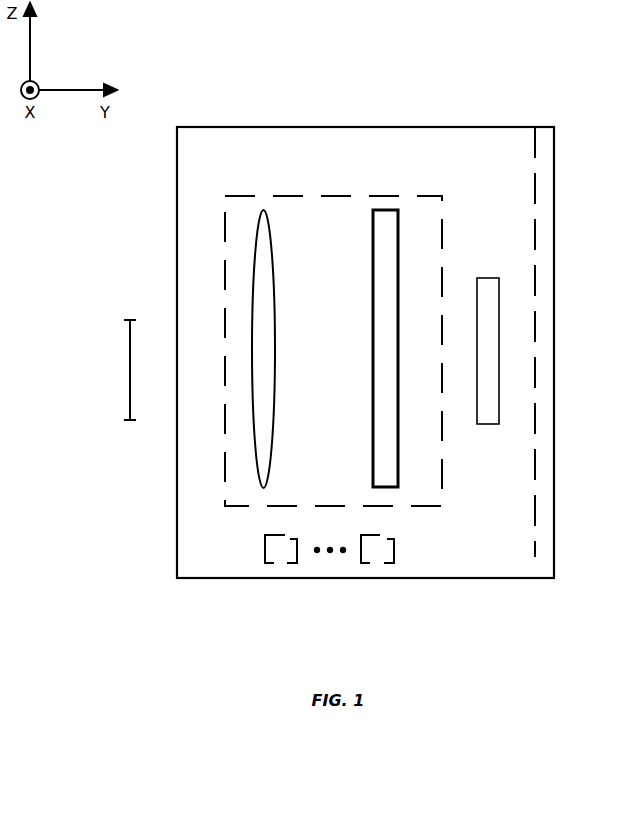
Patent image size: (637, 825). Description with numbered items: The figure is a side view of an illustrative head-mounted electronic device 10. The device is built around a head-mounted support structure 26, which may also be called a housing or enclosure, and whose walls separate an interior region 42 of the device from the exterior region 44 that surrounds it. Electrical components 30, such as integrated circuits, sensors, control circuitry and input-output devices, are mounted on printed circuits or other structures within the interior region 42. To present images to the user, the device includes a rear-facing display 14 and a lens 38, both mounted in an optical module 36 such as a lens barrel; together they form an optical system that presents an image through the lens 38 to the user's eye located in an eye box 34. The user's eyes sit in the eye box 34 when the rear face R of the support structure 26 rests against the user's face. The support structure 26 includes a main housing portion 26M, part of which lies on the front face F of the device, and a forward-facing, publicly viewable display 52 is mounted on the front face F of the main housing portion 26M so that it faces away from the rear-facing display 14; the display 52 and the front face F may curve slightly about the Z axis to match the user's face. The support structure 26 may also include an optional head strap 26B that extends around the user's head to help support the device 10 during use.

The head-mounted device 10 is at (586, 298).
The display 14 is at (385, 210).
The head-mounted support structure 26 is at (177, 100).
The main housing portion 26M is at (204, 579).
The strap 26B is at (490, 425).
The electrical components 30 is at (278, 562).
The eye box 34 is at (130, 320).
The optical module 36 is at (443, 248).
The lens 38 is at (263, 212).
The interior region 42 is at (473, 544).
The exterior region 44 is at (491, 44).
The display 52 is at (540, 189).
The front face F is at (570, 505).
The rear face R is at (170, 503).